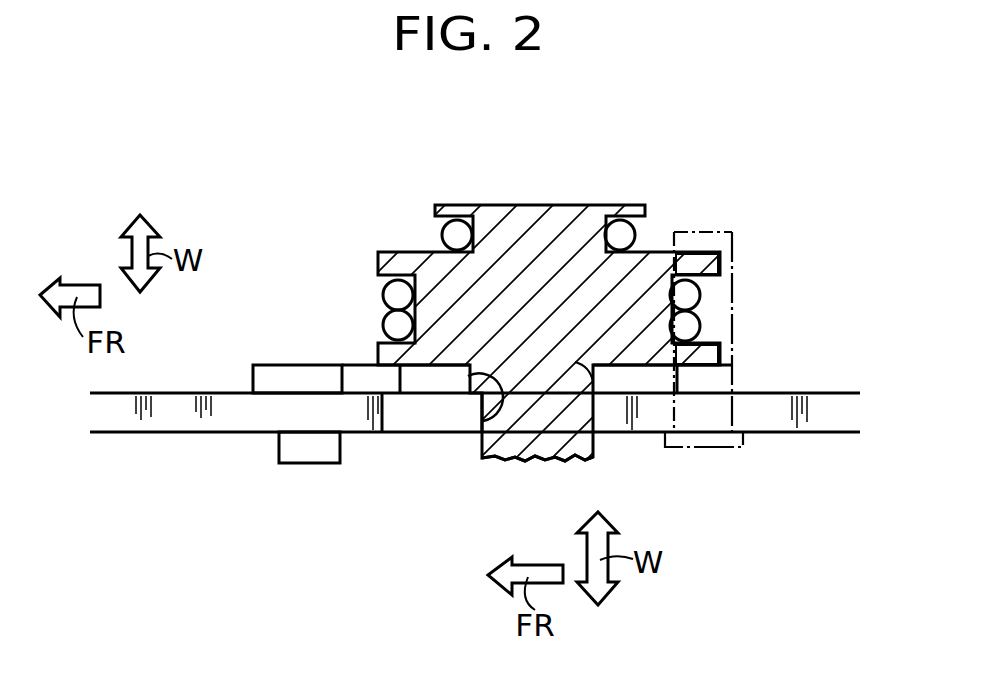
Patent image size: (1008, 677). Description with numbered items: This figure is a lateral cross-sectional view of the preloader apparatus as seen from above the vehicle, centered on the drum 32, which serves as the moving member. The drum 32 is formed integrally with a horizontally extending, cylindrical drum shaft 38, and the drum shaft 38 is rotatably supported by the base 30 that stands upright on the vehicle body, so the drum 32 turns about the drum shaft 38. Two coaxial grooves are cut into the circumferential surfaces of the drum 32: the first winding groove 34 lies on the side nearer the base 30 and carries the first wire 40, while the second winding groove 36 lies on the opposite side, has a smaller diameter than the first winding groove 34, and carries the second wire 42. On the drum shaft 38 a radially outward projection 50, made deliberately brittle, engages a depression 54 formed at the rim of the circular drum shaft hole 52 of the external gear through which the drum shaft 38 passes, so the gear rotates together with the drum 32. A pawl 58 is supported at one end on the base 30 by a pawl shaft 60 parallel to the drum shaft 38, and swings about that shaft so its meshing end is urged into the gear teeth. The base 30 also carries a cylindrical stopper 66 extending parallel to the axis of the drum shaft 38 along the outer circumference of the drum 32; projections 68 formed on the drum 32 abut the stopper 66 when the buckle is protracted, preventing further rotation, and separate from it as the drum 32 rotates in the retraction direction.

The base 30 is at (820, 392).
The drum 32 is at (579, 200).
The first winding groove 34 is at (414, 292).
The second winding groove 36 is at (449, 219).
The drum shaft 38 is at (570, 458).
The first wire 40 is at (700, 290).
The second wire 42 is at (636, 226).
The projection 50 is at (432, 434).
The drum shaft hole 52 is at (577, 356).
The depression 54 is at (447, 395).
The pawl 58 is at (266, 360).
The pawl shaft 60 is at (318, 455).
The stopper 66 is at (720, 230).
The projections 68 is at (713, 268).